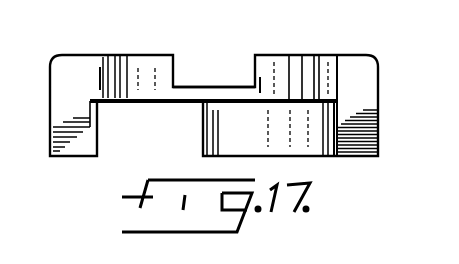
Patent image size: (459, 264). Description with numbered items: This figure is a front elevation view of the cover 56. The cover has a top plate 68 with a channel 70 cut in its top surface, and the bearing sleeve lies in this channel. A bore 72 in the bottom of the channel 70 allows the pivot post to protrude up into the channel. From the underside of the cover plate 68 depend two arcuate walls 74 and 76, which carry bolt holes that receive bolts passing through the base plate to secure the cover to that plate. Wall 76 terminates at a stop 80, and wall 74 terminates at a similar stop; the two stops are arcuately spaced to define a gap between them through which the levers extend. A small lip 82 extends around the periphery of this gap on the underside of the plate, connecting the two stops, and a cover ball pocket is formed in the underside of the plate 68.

The cover 56 is at (355, 53).
The top plate 68 is at (311, 58).
The channel 70 is at (255, 59).
The bore 72 is at (209, 87).
The arcuate wall 74 is at (72, 146).
The arcuate wall 76 is at (316, 143).
The stop 80 is at (201, 142).
The lip 82 is at (167, 104).